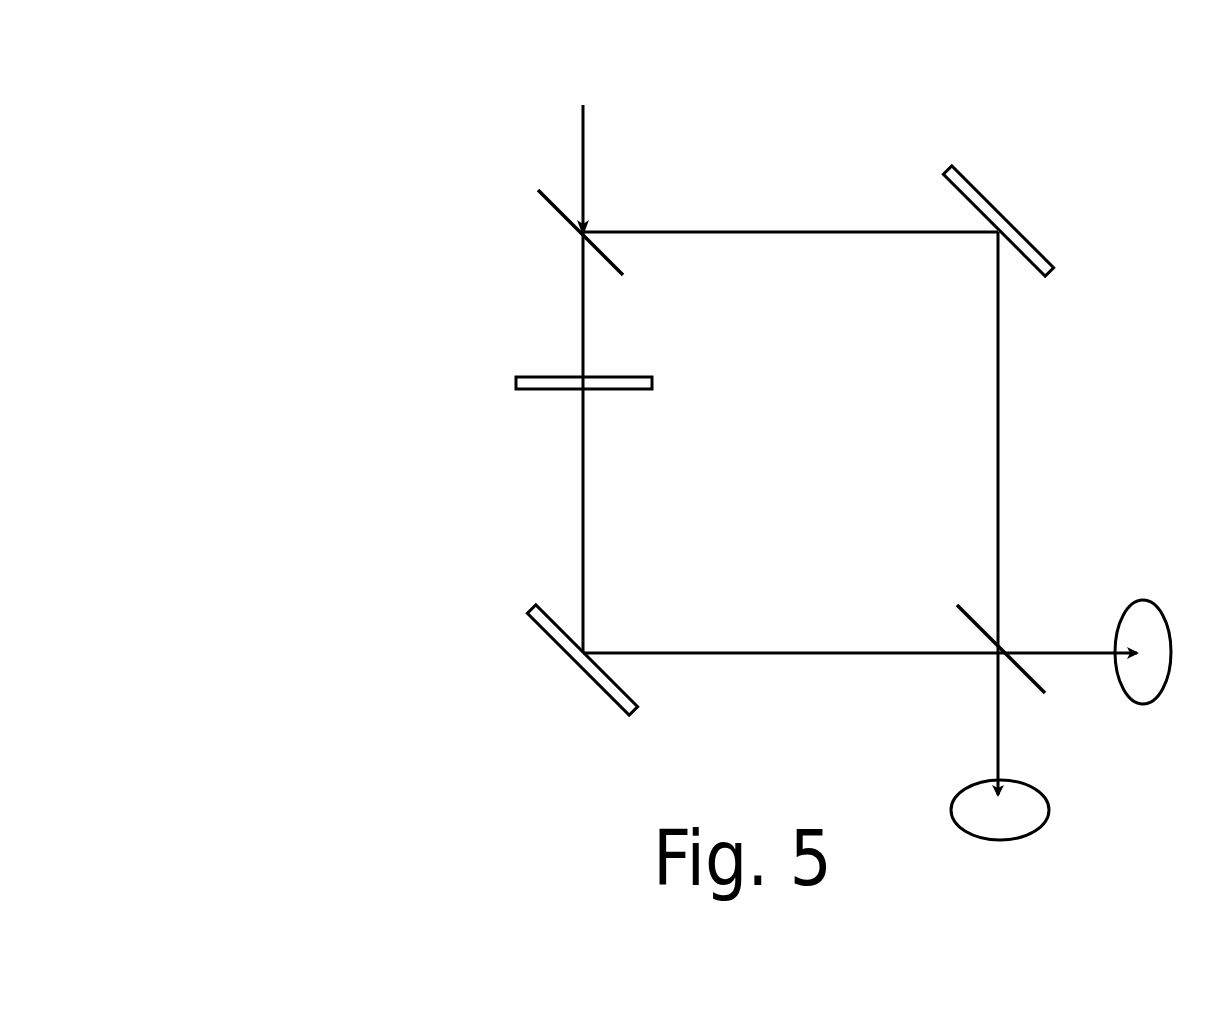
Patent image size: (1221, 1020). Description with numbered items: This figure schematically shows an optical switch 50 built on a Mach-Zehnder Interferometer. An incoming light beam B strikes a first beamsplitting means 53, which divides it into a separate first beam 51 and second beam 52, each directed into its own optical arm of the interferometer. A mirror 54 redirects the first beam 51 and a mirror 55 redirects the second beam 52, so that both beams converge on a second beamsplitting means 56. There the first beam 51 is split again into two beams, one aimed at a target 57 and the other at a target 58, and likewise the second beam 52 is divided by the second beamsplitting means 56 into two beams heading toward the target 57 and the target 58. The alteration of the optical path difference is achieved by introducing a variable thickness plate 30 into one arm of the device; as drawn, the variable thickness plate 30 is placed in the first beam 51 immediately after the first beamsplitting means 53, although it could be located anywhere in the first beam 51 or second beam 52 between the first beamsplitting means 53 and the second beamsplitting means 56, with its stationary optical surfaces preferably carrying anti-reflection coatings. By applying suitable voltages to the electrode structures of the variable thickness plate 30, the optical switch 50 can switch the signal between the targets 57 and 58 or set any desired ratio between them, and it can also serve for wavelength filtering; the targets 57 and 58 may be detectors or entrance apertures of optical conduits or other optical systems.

The optical switch 50 is at (396, 88).
The light beam B is at (583, 138).
The variable thickness plate 30 is at (516, 383).
The first beam 51 is at (584, 490).
The second beam 52 is at (753, 228).
The first beamsplitting means 53 is at (562, 213).
The mirror 54 is at (553, 630).
The mirror 55 is at (990, 210).
The second beamsplitting means 56 is at (958, 617).
The target 57 is at (1138, 620).
The target 58 is at (1035, 816).